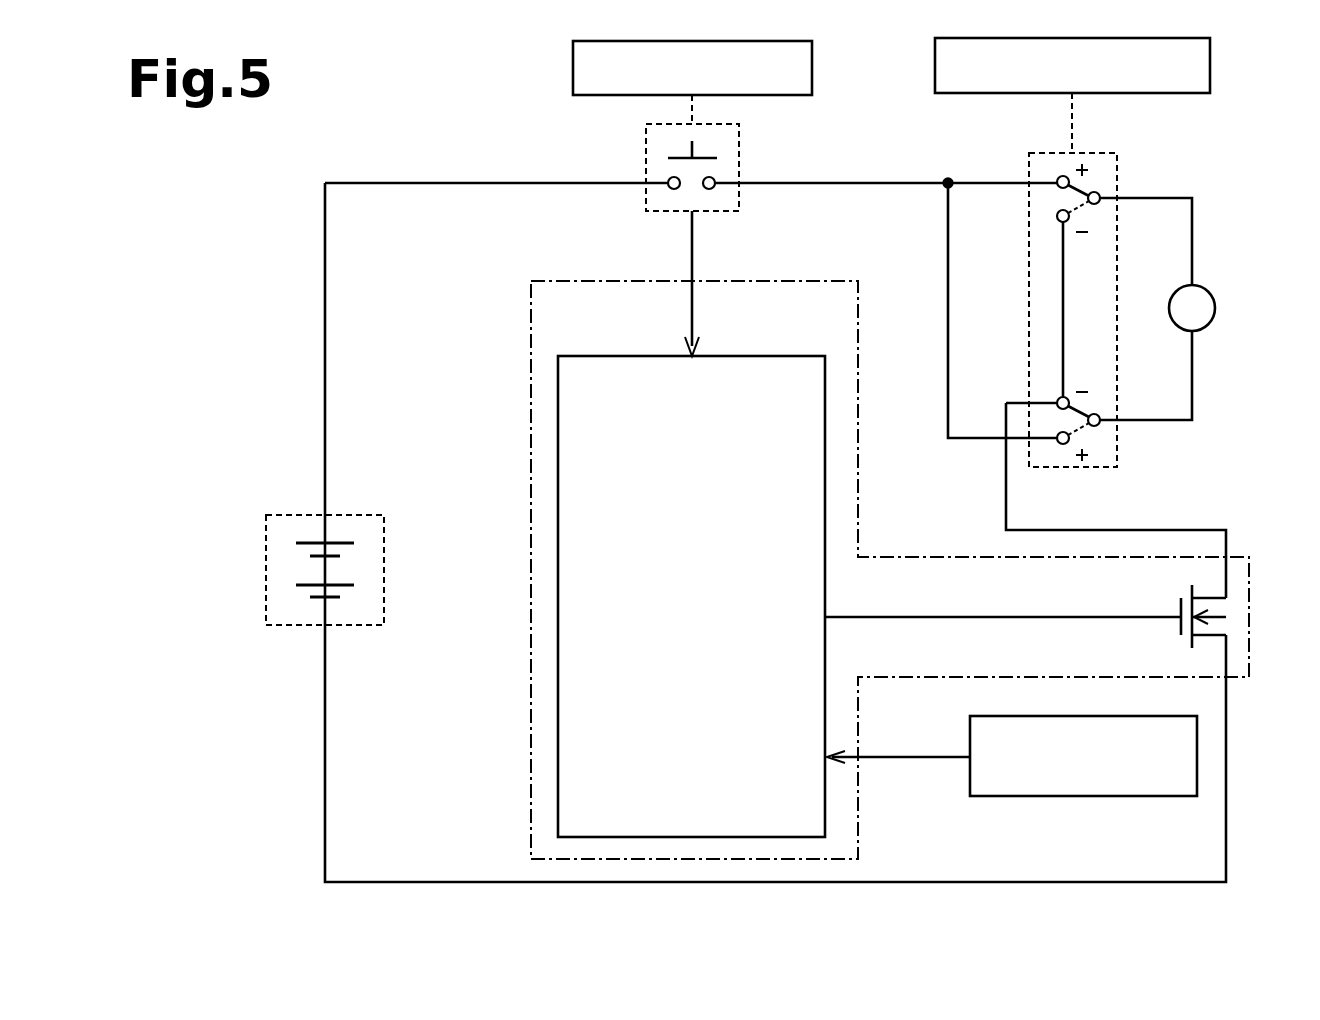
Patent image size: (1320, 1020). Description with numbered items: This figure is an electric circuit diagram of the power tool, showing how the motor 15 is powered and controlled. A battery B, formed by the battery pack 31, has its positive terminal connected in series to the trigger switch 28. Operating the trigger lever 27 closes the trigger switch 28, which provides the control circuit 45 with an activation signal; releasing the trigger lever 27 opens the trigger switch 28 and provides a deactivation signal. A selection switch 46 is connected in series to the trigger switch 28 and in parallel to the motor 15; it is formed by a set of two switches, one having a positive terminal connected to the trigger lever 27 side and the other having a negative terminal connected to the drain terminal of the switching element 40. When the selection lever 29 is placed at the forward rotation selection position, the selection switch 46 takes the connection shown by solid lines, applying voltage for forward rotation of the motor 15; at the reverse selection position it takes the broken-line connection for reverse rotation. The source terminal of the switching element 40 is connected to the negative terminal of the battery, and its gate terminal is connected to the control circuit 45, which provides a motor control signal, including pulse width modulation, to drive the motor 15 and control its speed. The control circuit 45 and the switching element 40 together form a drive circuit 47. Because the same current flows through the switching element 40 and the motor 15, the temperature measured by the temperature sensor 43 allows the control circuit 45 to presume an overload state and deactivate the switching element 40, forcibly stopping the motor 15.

The trigger lever 27 is at (812, 67).
The trigger switch 28 is at (739, 144).
The selection lever 29 is at (1210, 66).
The selection switch 46 is at (1105, 152).
The motor 15 is at (1215, 308).
The drive circuit 47 is at (818, 278).
The control circuit 45 is at (783, 354).
The switching element 40 is at (1175, 612).
The temperature sensor 43 is at (1085, 797).
The battery pack 31 is at (340, 515).